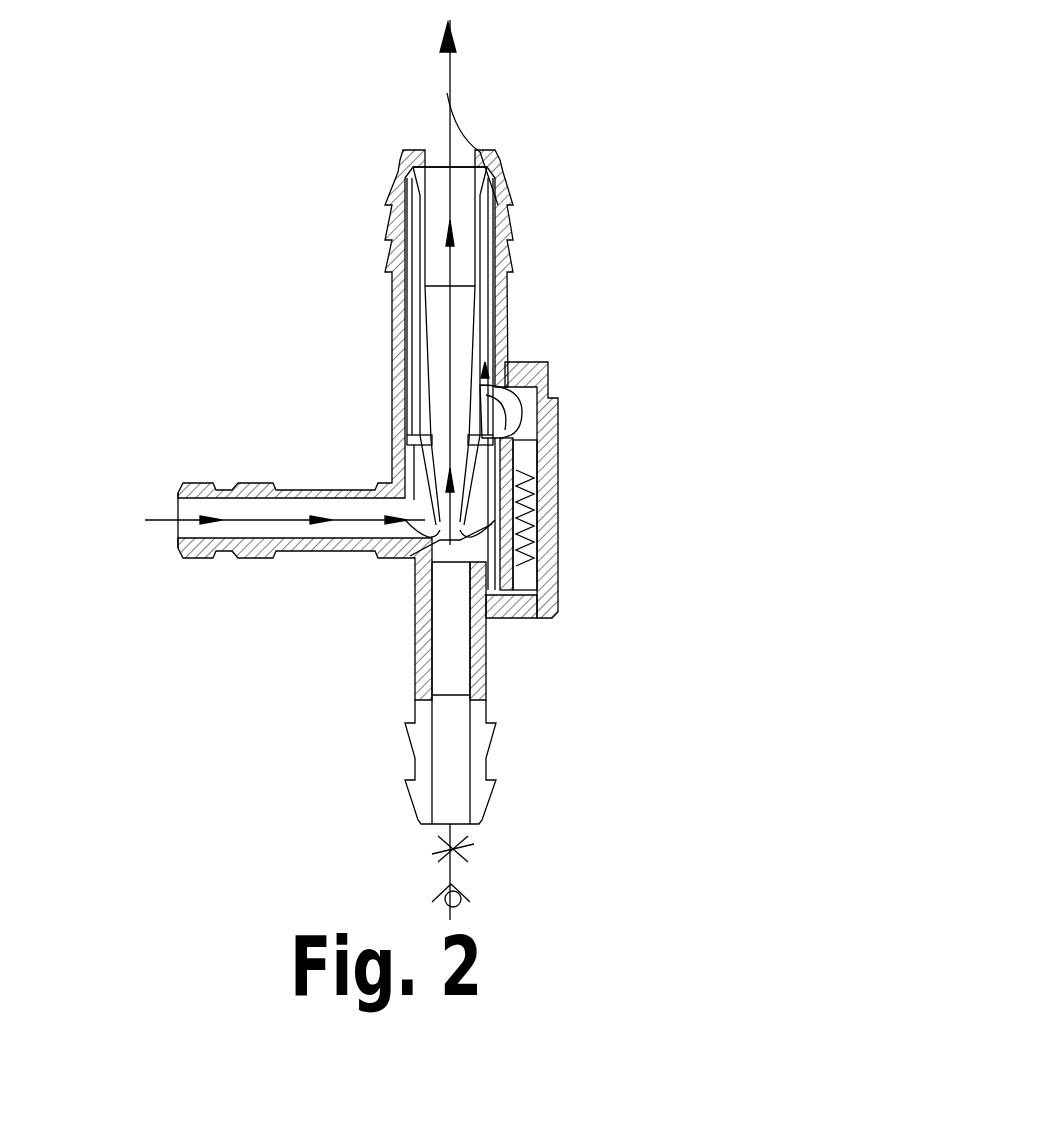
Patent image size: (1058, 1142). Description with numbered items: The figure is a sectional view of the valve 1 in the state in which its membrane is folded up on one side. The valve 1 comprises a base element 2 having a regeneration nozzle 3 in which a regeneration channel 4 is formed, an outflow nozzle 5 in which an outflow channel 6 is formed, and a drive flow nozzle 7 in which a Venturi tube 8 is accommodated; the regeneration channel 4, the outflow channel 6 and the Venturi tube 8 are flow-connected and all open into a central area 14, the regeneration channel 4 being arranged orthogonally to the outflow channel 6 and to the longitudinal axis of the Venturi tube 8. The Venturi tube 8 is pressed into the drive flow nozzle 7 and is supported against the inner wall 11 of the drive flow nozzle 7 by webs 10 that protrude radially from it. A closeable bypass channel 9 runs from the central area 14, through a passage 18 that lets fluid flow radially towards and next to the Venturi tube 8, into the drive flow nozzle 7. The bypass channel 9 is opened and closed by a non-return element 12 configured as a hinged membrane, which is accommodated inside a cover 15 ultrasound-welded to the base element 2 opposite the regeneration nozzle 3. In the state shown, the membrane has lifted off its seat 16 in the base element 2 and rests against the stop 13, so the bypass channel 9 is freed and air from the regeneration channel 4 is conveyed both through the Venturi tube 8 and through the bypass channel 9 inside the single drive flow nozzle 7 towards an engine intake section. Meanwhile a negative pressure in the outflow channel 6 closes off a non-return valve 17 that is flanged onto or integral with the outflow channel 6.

The valve 1 is at (648, 200).
The base element 2 is at (437, 480).
The regeneration nozzle 3 is at (255, 480).
The regeneration channel 4 is at (345, 515).
The outflow nozzle 5 is at (418, 620).
The outflow channel 6 is at (450, 685).
The drive flow nozzle 7 is at (393, 307).
The Venturi tube 8 is at (462, 217).
The bypass channel 9 is at (482, 338).
The webs 10 is at (483, 253).
The inner wall 11 is at (485, 338).
The non-return element 12 is at (505, 470).
The stop 13 is at (507, 523).
The central area 14 is at (410, 555).
The cover 15 is at (558, 533).
The seat 16 is at (555, 600).
The non-return valve 17 is at (453, 886).
The passage 18 is at (492, 400).